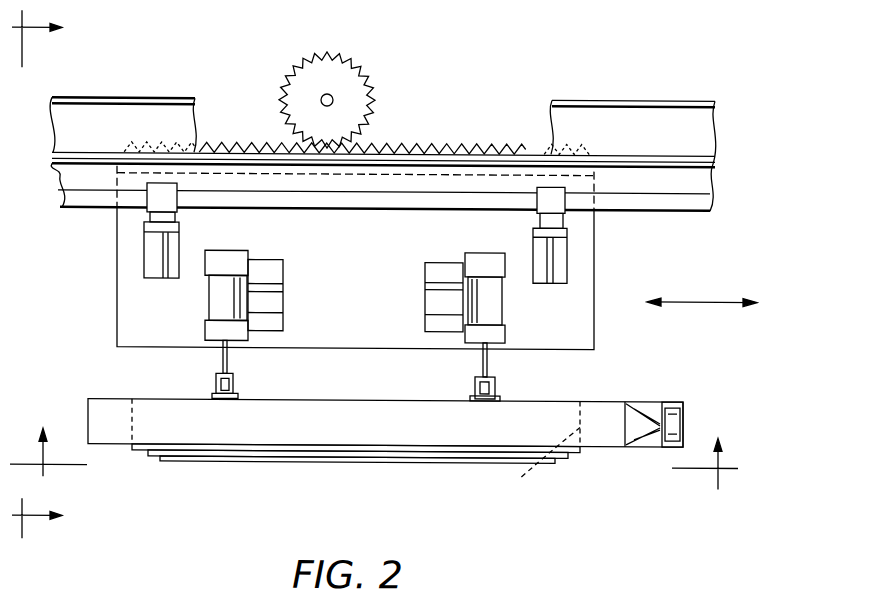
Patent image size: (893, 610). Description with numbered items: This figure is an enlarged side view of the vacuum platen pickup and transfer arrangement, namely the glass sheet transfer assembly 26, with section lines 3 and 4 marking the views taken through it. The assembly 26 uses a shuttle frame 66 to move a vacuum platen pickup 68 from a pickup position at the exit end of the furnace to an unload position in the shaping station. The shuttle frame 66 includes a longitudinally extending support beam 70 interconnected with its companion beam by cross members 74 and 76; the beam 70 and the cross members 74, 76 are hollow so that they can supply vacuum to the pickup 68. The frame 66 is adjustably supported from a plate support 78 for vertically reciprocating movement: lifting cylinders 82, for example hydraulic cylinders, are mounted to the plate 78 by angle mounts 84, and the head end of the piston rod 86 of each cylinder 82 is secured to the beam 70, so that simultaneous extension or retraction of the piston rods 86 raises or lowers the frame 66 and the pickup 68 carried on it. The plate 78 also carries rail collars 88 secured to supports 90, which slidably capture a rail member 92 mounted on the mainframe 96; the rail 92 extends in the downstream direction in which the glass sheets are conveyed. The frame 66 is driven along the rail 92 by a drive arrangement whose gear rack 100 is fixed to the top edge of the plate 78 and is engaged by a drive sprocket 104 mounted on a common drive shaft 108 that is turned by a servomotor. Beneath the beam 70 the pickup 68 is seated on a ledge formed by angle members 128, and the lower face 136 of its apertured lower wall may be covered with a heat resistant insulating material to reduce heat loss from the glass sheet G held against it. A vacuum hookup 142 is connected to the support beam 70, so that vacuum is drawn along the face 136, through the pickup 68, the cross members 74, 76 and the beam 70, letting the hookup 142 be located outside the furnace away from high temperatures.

The section line 3- 3 is at (45, 274).
The section line 4- 4 is at (374, 448).
The glass sheet transfer assembly 26 is at (523, 44).
The shuttle frame 66 is at (542, 399).
The vacuum platen pickup 68 is at (152, 456).
The support beam 70 is at (362, 398).
The cross member 74 is at (135, 418).
The cross member 76 is at (542, 463).
The plate support 78 is at (594, 321).
The lifting cylinder 82 is at (205, 331).
The angle mount 84 is at (268, 331).
The piston rod 86 is at (229, 358).
The rail collar 88 is at (536, 194).
The support 90 is at (567, 252).
The rail member 92 is at (712, 193).
The mainframe 96 is at (647, 95).
The gear rack 100 is at (229, 140).
The drive sprocket 104 is at (305, 62).
The drive shaft 108 is at (334, 96).
The angle member 128 is at (135, 450).
The lower face 136 is at (228, 461).
The vacuum hookup 142 is at (646, 398).
The glass sheet G is at (378, 460).